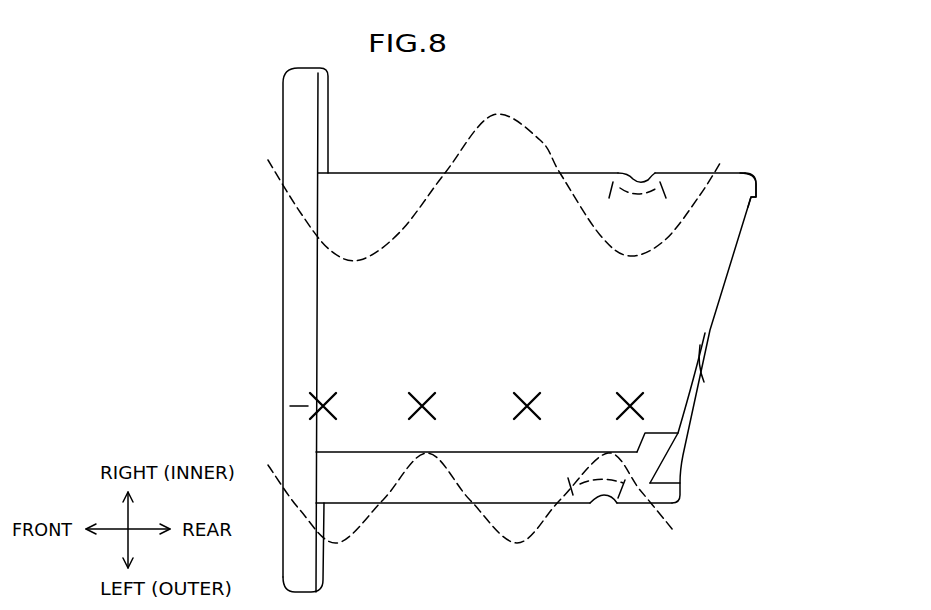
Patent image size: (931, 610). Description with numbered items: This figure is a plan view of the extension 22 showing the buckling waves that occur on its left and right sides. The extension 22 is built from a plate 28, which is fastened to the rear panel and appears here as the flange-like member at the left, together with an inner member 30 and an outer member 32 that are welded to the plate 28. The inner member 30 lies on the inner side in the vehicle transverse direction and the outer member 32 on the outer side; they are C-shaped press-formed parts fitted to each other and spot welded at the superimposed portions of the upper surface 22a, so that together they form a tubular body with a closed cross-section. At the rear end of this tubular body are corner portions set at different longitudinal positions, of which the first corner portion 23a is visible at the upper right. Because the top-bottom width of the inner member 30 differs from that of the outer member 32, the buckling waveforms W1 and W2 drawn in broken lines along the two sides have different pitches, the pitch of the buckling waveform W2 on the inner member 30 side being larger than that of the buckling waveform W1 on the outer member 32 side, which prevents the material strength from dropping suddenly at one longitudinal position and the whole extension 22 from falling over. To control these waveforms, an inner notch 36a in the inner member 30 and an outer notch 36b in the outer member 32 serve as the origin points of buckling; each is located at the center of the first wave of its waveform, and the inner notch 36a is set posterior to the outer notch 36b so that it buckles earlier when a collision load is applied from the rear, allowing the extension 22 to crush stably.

The extension 22 is at (703, 131).
The upper surface 22a is at (526, 306).
The first corner portion 23a is at (753, 178).
The plate 28 is at (272, 238).
The inner member 30 is at (380, 172).
The outer member 32 is at (404, 505).
The inner notch 36a is at (646, 175).
The outer notch 36b is at (597, 505).
The buckling waveform W1 is at (488, 506).
The buckling waveform W2 is at (507, 187).